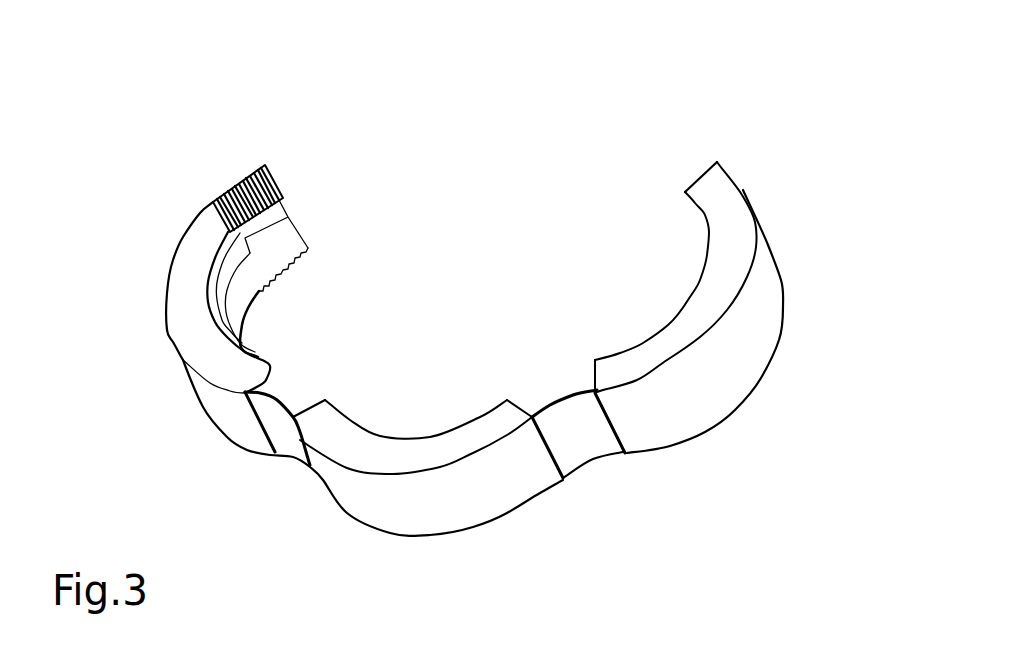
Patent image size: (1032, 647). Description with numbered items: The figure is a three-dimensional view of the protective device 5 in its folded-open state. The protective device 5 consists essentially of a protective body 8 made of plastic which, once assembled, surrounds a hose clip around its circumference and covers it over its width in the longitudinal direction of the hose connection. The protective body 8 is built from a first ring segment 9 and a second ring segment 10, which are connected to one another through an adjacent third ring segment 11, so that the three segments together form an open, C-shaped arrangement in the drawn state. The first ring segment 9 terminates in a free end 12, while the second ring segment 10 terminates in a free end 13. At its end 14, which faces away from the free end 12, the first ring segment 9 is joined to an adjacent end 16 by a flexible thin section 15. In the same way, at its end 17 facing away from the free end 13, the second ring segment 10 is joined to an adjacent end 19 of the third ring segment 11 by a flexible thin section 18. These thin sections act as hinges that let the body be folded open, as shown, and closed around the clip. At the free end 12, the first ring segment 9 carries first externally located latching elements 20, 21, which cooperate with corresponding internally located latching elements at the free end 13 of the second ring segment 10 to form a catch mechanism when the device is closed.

The protective device 5 is at (462, 163).
The protective body 8 is at (523, 538).
The first ring segment 9 is at (178, 293).
The second ring segment 10 is at (728, 345).
The third ring segment 11 is at (418, 512).
The free end 12 is at (217, 193).
The free end 13 is at (723, 205).
The end 14 is at (235, 418).
The flexible thin section 15 is at (277, 420).
The adjacent end 16 is at (318, 420).
The end 17 is at (627, 418).
The flexible thin section 18 is at (580, 438).
The adjacent end 19 is at (503, 417).
The first latching element 20 is at (268, 172).
The first latching element 21 is at (262, 276).